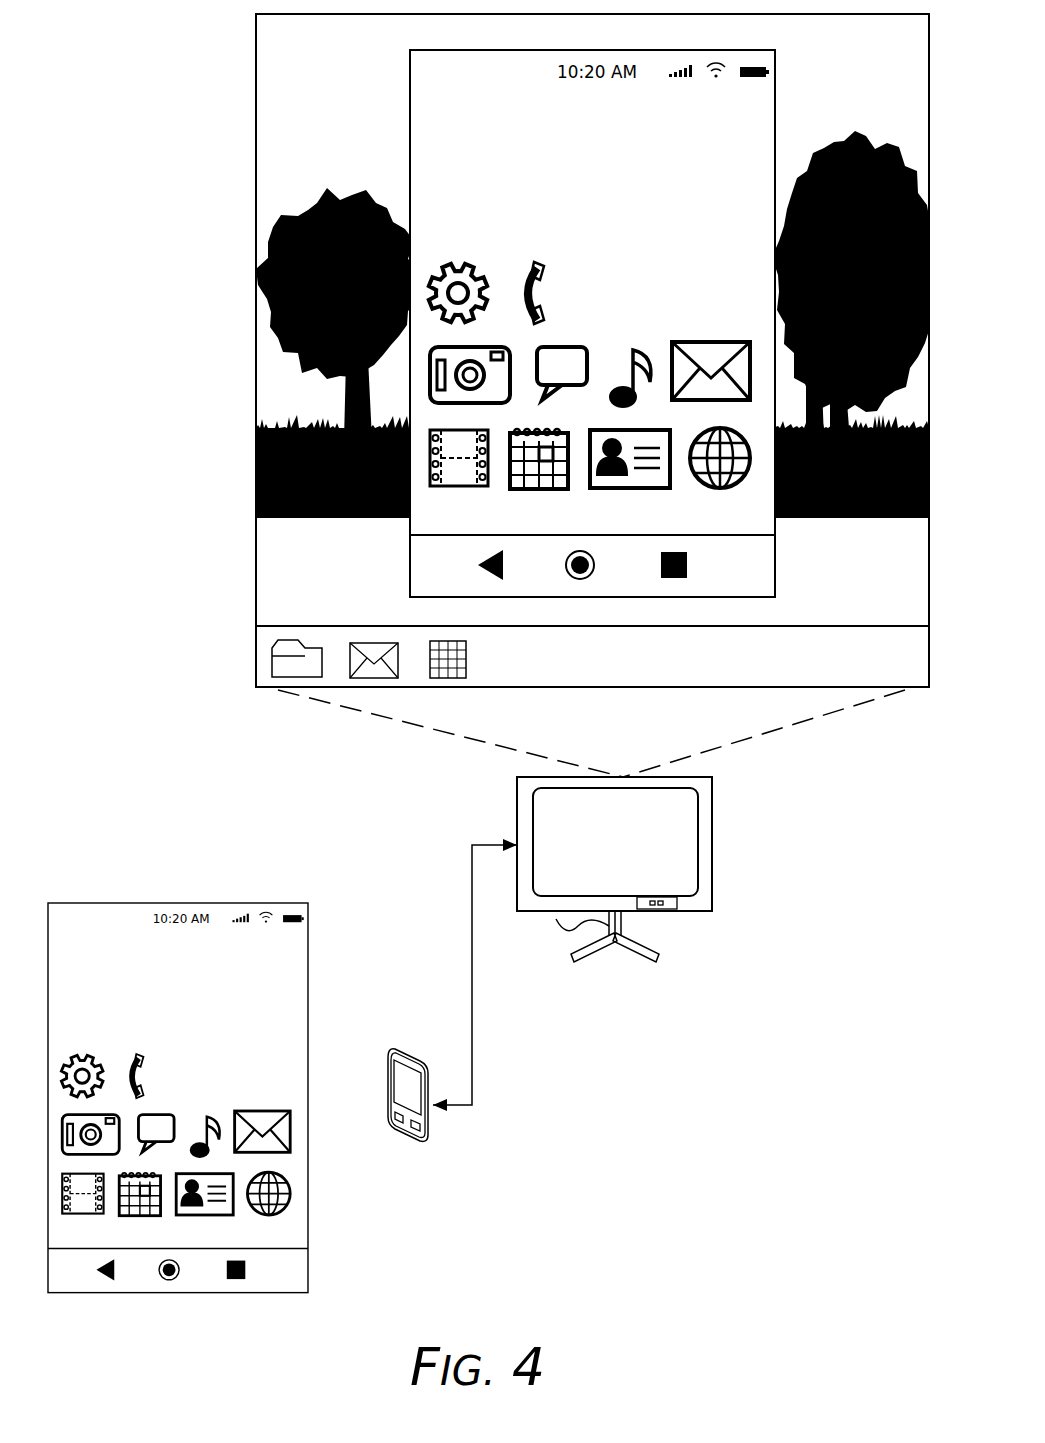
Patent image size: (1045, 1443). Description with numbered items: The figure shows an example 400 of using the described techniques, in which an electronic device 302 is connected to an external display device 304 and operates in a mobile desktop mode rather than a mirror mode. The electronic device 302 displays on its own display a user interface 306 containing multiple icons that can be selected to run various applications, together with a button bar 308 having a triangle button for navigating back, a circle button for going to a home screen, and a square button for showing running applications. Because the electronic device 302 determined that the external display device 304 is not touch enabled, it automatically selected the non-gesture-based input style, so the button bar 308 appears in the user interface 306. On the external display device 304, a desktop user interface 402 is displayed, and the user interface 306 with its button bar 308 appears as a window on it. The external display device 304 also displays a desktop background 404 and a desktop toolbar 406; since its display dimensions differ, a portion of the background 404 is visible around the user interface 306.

The example 400 is at (165, 78).
The desktop user interface 402 is at (255, 377).
The desktop background 404 is at (280, 176).
The desktop toolbar 406 is at (544, 670).
The user interface 306 is at (410, 68).
The button bar 308 is at (416, 571).
The external display device 304 is at (713, 843).
The electronic device 302 is at (420, 1140).